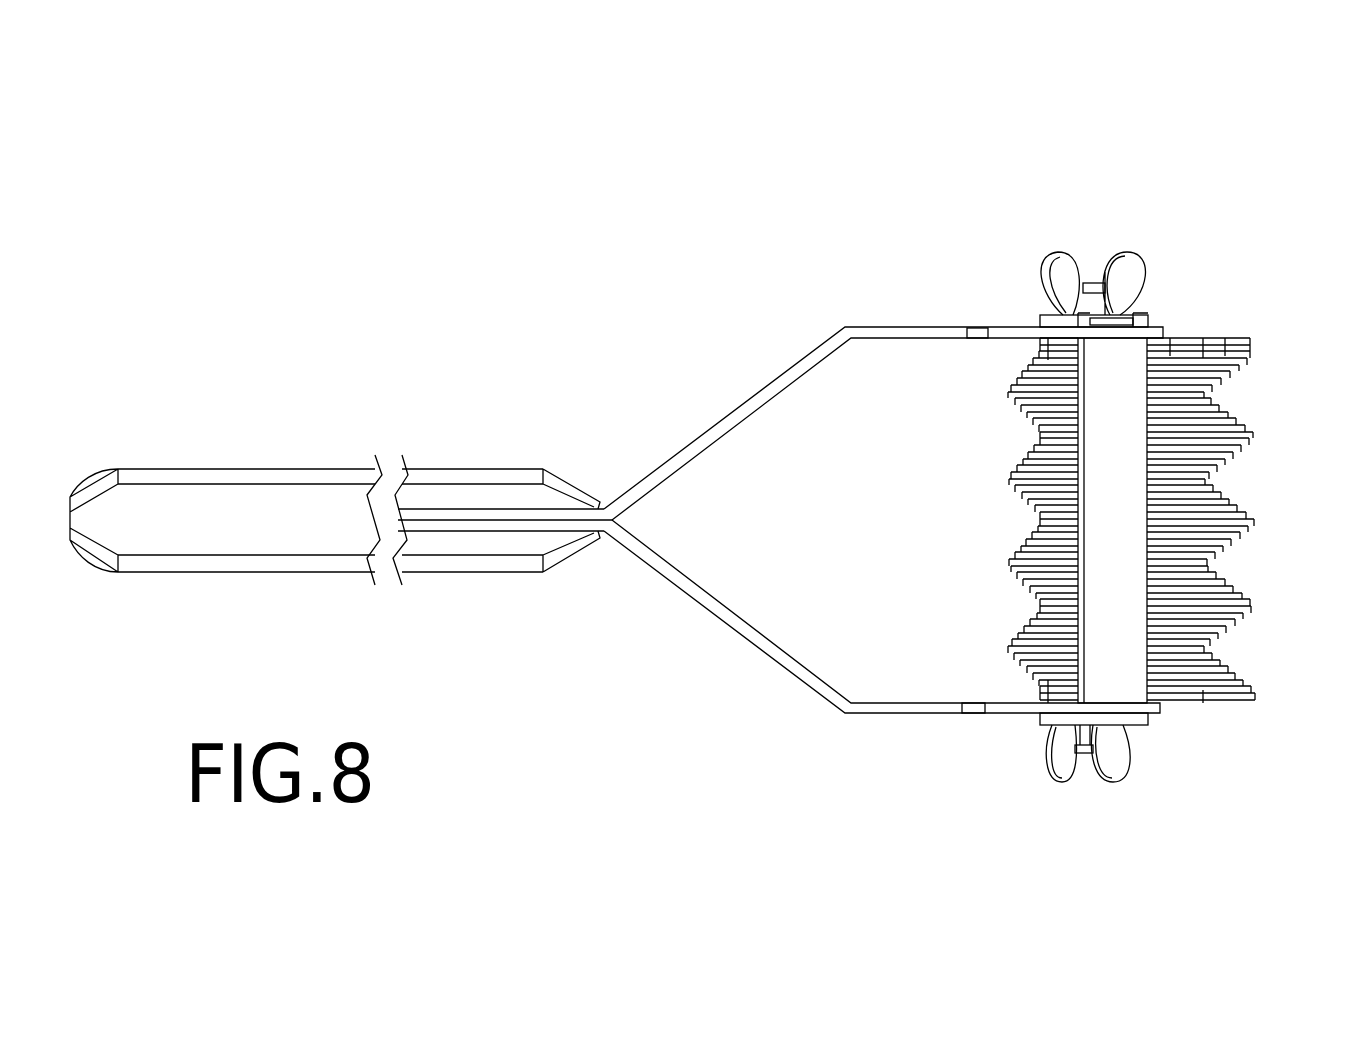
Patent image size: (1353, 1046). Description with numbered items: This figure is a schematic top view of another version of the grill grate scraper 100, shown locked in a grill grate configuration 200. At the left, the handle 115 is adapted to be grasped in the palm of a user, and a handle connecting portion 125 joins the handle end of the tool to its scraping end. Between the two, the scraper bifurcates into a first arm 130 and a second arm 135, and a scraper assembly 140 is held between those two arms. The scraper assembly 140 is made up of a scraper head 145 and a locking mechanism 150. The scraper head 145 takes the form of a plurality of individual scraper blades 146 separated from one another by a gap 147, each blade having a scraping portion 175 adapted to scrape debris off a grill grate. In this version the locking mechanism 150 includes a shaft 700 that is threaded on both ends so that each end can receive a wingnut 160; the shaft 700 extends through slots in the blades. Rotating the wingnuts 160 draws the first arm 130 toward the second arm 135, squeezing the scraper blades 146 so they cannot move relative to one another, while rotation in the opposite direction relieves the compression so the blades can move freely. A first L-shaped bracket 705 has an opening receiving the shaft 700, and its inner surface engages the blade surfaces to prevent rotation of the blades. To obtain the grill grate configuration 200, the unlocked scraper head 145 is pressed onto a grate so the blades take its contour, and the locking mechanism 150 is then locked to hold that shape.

The grill grate scraper 100 is at (922, 155).
The handle 115 is at (200, 573).
The handle connecting portion 125 is at (613, 450).
The first arm 130 is at (805, 360).
The second arm 135 is at (785, 672).
The scraper assembly 140 is at (1177, 800).
The scraper head 145 is at (1180, 218).
The scraper blades 146 is at (1250, 340).
The gap 147 is at (1250, 346).
The locking mechanism 150 is at (1100, 145).
The wingnut 160 is at (1063, 270).
The scraping portion 175 is at (1233, 723).
The grill grate configuration 200 is at (1208, 283).
The shaft 700 is at (1088, 757).
The first L-shaped bracket 705 is at (1123, 670).